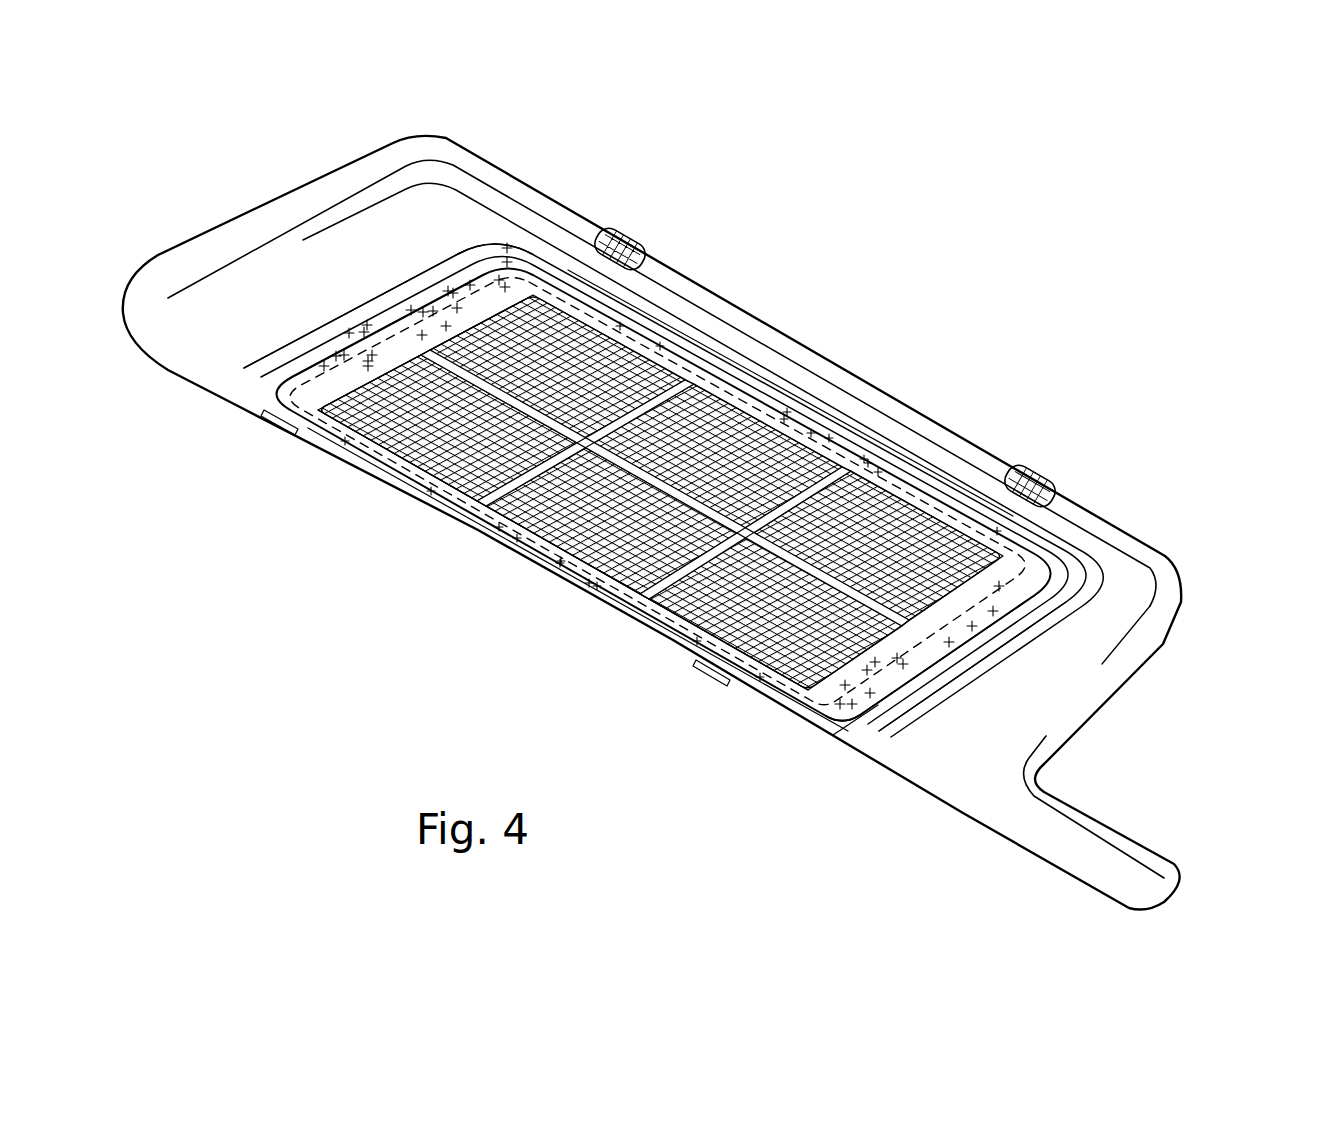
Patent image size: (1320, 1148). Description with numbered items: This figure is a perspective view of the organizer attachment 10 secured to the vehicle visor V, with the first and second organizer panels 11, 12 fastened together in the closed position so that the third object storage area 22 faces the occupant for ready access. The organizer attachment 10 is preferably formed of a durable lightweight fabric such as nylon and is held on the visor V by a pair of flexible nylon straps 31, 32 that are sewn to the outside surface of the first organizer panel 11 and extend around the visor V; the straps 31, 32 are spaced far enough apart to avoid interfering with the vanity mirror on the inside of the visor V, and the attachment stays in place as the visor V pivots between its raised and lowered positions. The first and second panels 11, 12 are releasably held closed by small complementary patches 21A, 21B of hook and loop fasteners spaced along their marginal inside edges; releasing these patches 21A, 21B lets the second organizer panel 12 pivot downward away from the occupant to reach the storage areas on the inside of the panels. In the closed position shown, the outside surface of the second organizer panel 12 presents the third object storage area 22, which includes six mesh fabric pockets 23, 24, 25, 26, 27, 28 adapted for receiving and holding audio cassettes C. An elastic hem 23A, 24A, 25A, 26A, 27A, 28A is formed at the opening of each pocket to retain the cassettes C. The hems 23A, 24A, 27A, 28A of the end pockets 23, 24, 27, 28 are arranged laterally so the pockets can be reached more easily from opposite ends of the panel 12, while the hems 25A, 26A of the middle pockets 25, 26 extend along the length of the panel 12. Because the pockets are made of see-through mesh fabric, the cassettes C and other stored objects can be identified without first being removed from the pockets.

The organizer attachment 10 is at (290, 250).
The first organizer panel 11 is at (495, 232).
The second organizer panel 12 is at (820, 687).
The patch of hook and loop fasteners 21A is at (550, 290).
The patch of hook and loop fasteners 21B is at (653, 287).
The third object storage area 22 is at (250, 345).
The mesh fabric pocket 23 is at (700, 340).
The elastic hem 23A is at (430, 280).
The mesh fabric pocket 24 is at (347, 437).
The elastic hem 24A is at (328, 380).
The mesh fabric pocket 25 is at (840, 425).
The elastic hem 25A is at (750, 395).
The mesh fabric pocket 26 is at (613, 612).
The elastic hem 26A is at (565, 583).
The mesh fabric pocket 27 is at (943, 593).
The elastic hem 27A is at (1055, 585).
The mesh fabric pocket 28 is at (763, 680).
The elastic hem 28A is at (907, 677).
The flexible nylon strap 31 is at (605, 240).
The flexible nylon strap 32 is at (1028, 468).
The audio cassette C is at (400, 450).
The vehicle visor V is at (1132, 606).